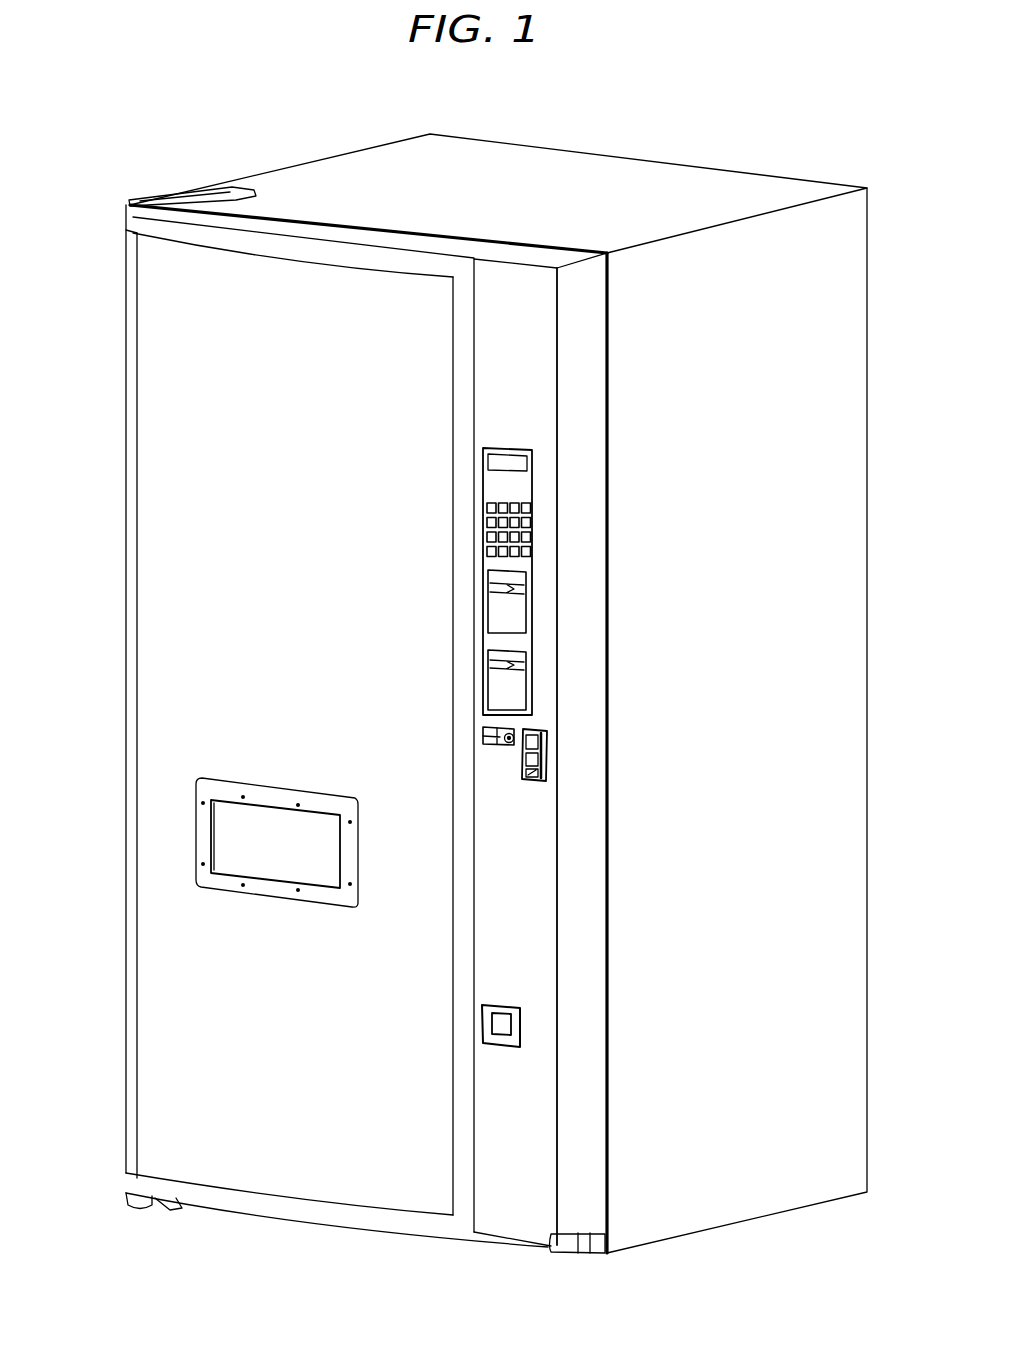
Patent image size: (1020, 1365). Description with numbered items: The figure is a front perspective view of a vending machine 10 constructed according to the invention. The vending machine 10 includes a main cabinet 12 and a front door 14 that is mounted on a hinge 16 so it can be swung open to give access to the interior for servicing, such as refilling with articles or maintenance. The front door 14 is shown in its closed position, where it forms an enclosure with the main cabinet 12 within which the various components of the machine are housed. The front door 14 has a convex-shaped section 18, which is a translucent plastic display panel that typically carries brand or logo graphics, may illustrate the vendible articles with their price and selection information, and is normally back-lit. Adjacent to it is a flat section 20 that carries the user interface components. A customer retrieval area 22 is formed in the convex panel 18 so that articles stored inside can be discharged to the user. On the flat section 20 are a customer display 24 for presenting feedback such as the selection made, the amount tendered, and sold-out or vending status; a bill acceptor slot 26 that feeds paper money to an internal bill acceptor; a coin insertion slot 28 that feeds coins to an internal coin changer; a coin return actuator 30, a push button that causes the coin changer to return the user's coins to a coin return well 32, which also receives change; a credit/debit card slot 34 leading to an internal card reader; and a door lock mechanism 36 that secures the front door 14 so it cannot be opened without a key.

The vending machine 10 is at (724, 103).
The main cabinet 12 is at (820, 180).
The front door 14 is at (300, 479).
The hinge 16 is at (176, 188).
The convex-shaped section 18 is at (168, 535).
The flat section 20 is at (517, 383).
The customer retrieval area 22 is at (196, 843).
The customer display 24 is at (528, 470).
The bill acceptor slot 26 is at (527, 580).
The coin insertion slot 28 is at (498, 728).
The coin return actuator 30 is at (514, 737).
The coin return well 32 is at (520, 1030).
The credit/debit card slot 34 is at (527, 656).
The door lock mechanism 36 is at (528, 520).